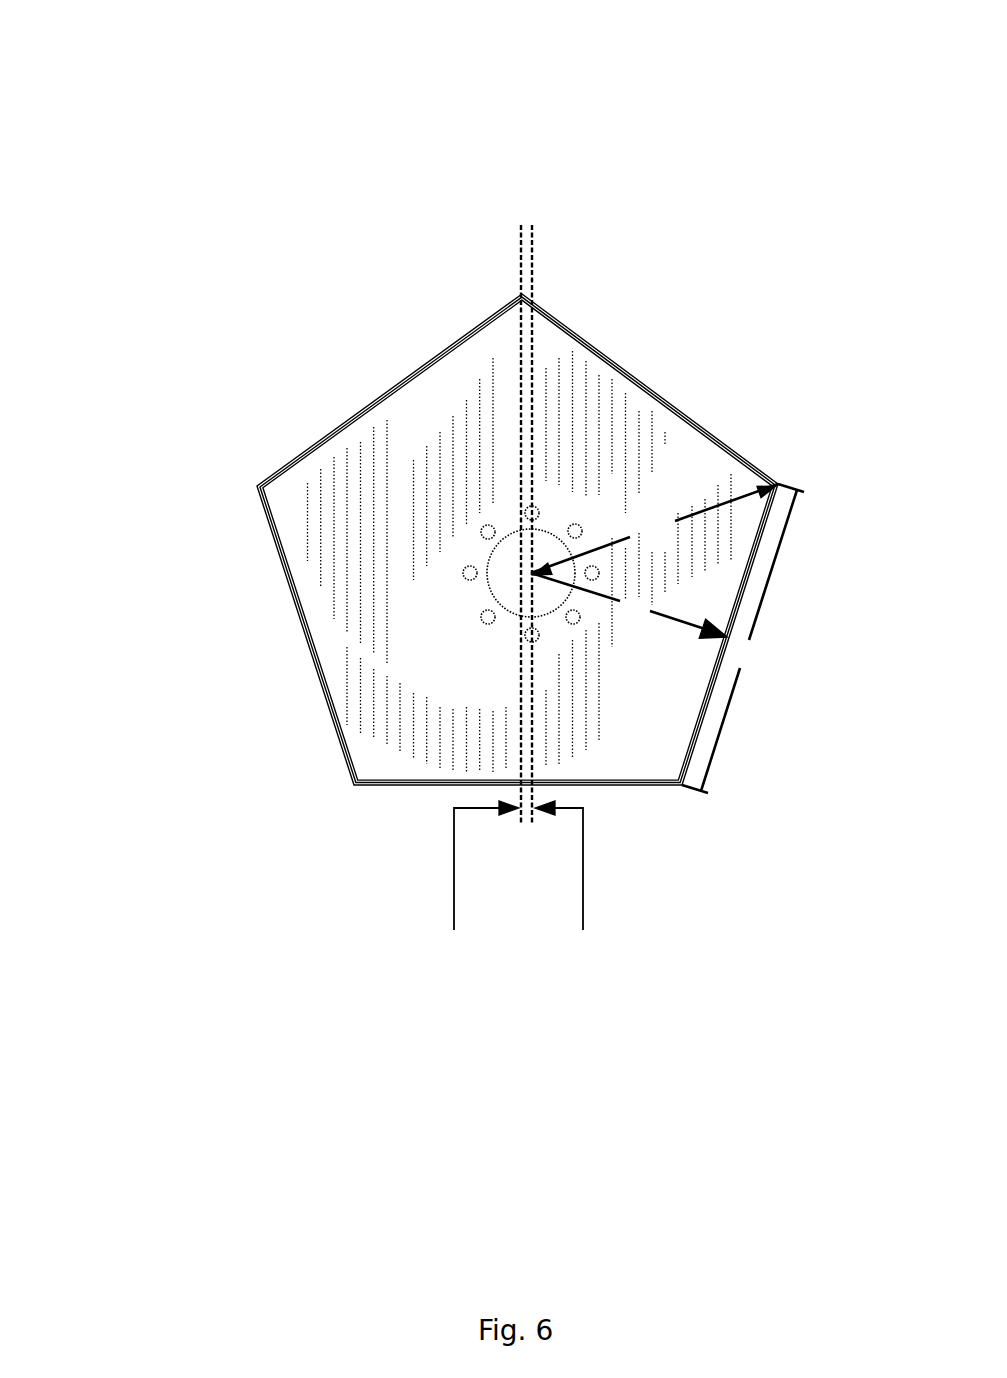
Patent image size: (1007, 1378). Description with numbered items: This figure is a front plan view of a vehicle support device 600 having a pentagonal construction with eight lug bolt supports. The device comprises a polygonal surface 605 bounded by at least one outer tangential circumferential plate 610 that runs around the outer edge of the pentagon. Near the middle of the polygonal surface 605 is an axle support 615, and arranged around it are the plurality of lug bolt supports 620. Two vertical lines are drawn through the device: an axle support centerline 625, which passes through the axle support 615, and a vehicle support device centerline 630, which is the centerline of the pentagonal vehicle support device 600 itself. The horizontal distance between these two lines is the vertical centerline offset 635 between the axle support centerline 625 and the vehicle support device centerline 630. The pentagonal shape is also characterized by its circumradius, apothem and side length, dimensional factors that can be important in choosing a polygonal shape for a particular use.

The vehicle support device 600 is at (132, 81).
The polygonal surface 605 is at (418, 366).
The outer tangential circumferential plate 610 is at (342, 393).
The axle support 615 is at (464, 551).
The lug bolt supports 620 is at (457, 630).
The axle support centerline 625 is at (563, 286).
The vehicle support device centerline 630 is at (552, 245).
The vertical centerline offset 635 is at (583, 930).